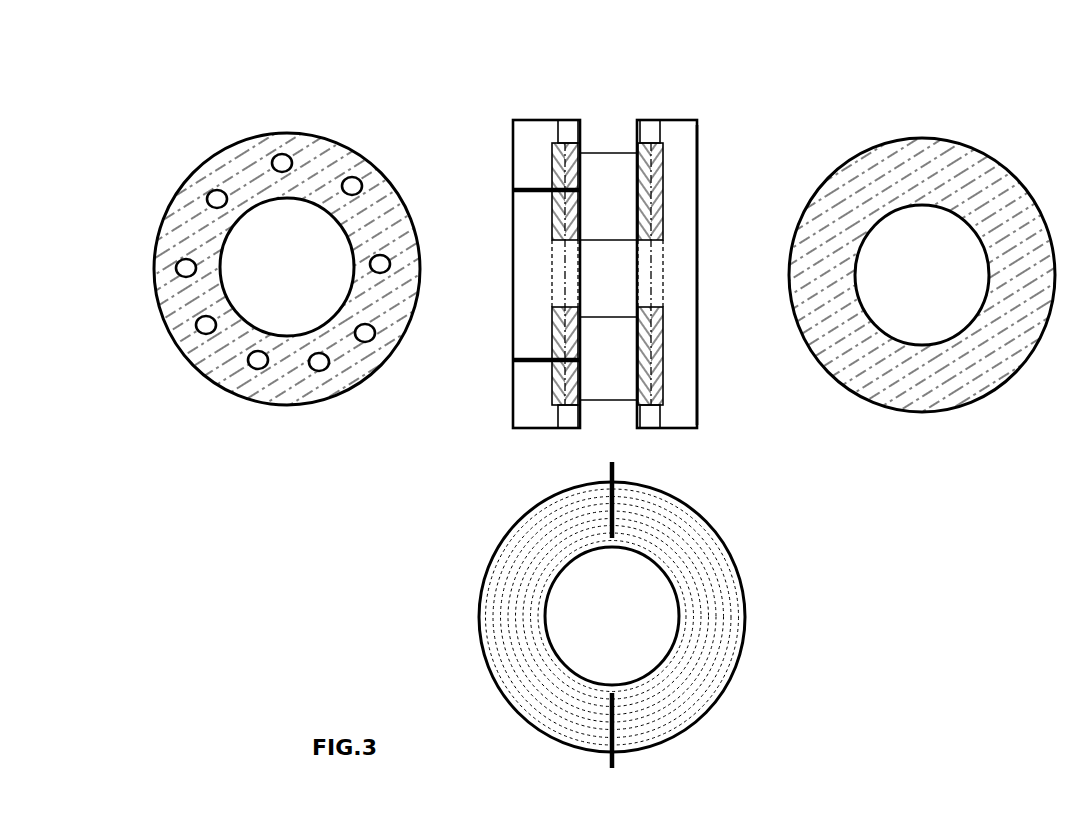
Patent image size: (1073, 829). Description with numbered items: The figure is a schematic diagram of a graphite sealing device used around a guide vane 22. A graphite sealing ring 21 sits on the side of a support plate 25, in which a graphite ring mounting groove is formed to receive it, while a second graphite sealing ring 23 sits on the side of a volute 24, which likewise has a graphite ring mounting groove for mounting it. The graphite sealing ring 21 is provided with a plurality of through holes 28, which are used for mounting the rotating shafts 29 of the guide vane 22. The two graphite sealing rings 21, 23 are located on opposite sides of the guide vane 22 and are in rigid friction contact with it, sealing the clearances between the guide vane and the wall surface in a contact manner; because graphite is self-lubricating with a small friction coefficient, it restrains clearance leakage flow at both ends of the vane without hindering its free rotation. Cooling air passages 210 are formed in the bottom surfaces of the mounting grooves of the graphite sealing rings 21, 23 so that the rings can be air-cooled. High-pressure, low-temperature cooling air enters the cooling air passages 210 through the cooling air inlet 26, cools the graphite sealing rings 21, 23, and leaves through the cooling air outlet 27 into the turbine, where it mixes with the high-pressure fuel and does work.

The graphite sealing ring 21 is at (170, 203).
The guide vane 22 is at (648, 141).
The graphite sealing ring 23 is at (986, 153).
The volute 24 is at (699, 160).
The support plate 25 is at (512, 140).
The cooling air inlet 26 is at (655, 125).
The cooling air outlet 27 is at (559, 413).
The through holes 28 is at (277, 155).
The rotating shafts 29 is at (512, 359).
The cooling air passage 210 is at (714, 530).